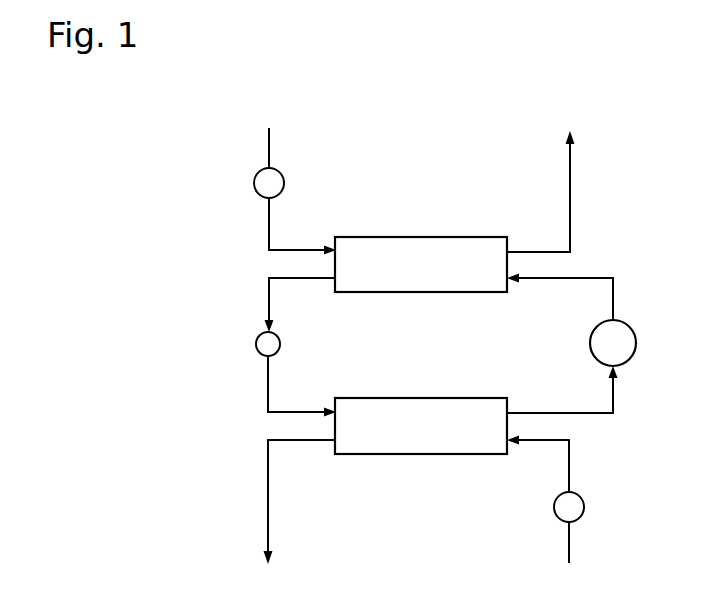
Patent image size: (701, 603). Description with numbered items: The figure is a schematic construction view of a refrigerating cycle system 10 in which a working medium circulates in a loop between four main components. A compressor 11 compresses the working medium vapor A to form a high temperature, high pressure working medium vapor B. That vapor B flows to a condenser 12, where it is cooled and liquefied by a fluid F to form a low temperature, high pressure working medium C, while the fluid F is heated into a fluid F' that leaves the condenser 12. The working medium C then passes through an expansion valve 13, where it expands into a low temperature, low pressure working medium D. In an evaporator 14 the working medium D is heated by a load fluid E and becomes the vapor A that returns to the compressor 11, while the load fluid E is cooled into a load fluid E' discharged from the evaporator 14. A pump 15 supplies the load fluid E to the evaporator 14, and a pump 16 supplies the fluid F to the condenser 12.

The refrigerating cycle system 10 is at (398, 172).
The compressor 11 is at (637, 345).
The condenser 12 is at (440, 237).
The expansion valve 13 is at (256, 341).
The evaporator 14 is at (440, 398).
The pump 15 is at (585, 508).
The pump 16 is at (254, 181).